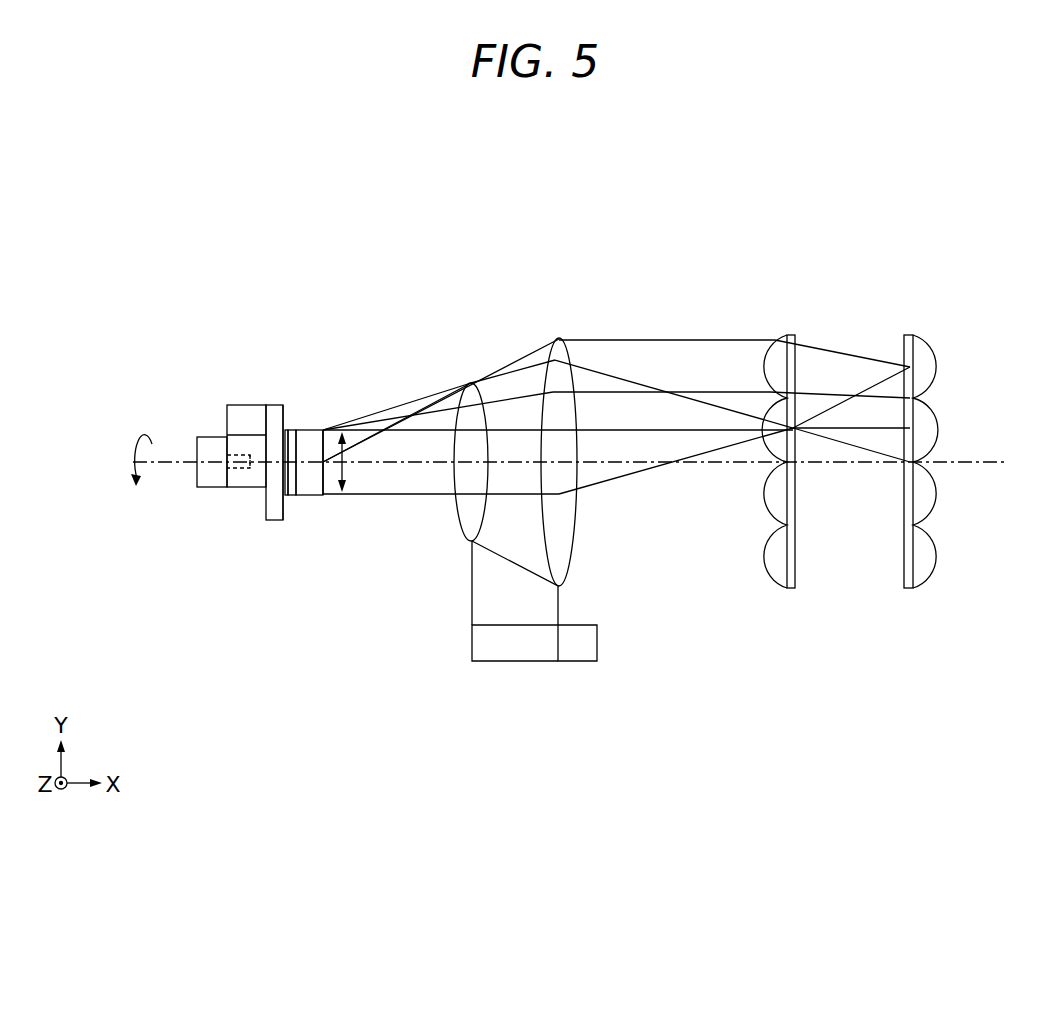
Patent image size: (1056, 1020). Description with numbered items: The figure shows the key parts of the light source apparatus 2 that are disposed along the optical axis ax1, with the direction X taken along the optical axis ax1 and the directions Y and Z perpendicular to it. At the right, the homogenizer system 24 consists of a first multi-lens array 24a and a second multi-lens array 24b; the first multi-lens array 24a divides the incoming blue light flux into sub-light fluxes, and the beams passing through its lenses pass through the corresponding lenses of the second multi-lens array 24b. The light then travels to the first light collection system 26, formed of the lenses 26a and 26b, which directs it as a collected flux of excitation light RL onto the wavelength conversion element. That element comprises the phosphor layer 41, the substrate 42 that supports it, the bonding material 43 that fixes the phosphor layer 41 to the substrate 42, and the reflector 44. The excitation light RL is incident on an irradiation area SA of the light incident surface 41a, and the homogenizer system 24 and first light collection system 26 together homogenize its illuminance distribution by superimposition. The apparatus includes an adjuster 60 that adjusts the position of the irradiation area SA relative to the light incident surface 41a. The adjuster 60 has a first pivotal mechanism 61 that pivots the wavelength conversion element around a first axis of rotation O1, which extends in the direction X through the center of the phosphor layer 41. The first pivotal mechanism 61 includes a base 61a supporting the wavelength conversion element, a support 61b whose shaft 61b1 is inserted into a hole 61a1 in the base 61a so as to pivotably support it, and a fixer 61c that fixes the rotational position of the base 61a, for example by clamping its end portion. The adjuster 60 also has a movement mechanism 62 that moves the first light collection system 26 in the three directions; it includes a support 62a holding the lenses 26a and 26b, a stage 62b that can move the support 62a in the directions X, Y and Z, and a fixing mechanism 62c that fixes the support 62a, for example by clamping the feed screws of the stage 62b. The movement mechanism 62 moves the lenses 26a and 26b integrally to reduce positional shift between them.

The light source apparatus 2 is at (948, 216).
The homogenizer system 24 is at (932, 257).
The first multi-lens array 24a is at (777, 360).
The second multi-lens array 24b is at (922, 360).
The first light collection system 26 is at (572, 250).
The lens 26a is at (458, 412).
The lens 26b is at (549, 372).
The phosphor layer 41 is at (310, 429).
The light incident surface 41a is at (328, 496).
The substrate 42 is at (268, 521).
The bonding material 43 is at (287, 497).
The reflector 44 is at (292, 429).
The adjuster 60 is at (227, 806).
The first pivotal mechanism 61 is at (332, 748).
The base 61a is at (243, 487).
The hole 61a1 is at (250, 455).
The support 61b is at (243, 487).
The shaft 61b1 is at (237, 455).
The fixer 61c is at (213, 478).
The movement mechanism 62 is at (388, 748).
The support 62a is at (483, 603).
The stage 62b is at (498, 655).
The fixing mechanism 62c is at (570, 650).
The first axis of rotation O1 is at (152, 457).
The irradiation area SA is at (344, 432).
The excitation light RL is at (373, 494).
The optical axis ax1 is at (995, 457).